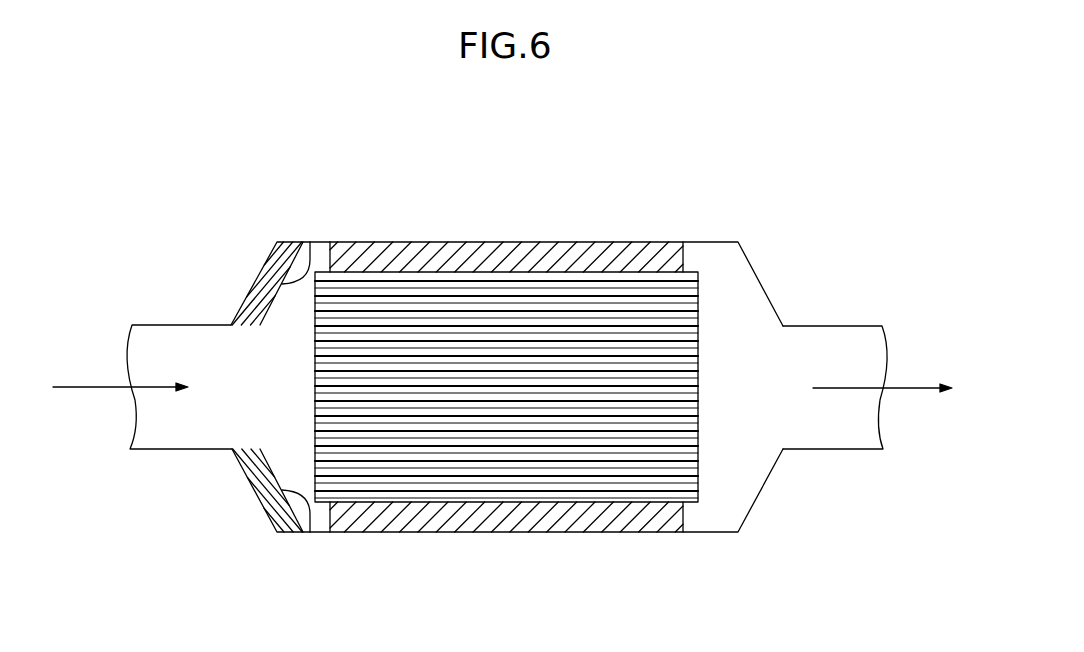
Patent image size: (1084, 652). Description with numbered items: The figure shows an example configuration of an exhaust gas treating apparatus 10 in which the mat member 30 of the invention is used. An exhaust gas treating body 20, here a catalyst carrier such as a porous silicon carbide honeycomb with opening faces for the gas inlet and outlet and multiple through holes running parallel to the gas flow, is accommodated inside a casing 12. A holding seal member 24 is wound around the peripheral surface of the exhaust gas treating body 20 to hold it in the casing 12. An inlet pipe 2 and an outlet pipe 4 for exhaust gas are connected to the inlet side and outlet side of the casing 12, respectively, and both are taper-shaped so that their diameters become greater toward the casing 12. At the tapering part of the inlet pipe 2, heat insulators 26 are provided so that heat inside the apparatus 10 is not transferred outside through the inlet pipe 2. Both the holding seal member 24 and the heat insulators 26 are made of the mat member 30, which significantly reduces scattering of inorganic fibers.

The inlet pipe 2 is at (180, 325).
The outlet pipe 4 is at (855, 326).
The exhaust gas treating apparatus 10 is at (608, 132).
The casing 12 is at (711, 535).
The exhaust gas treating body 20 is at (710, 311).
The holding seal member 24 is at (476, 242).
The heat insulators 26 is at (310, 242).
The mat member 30 is at (478, 389).